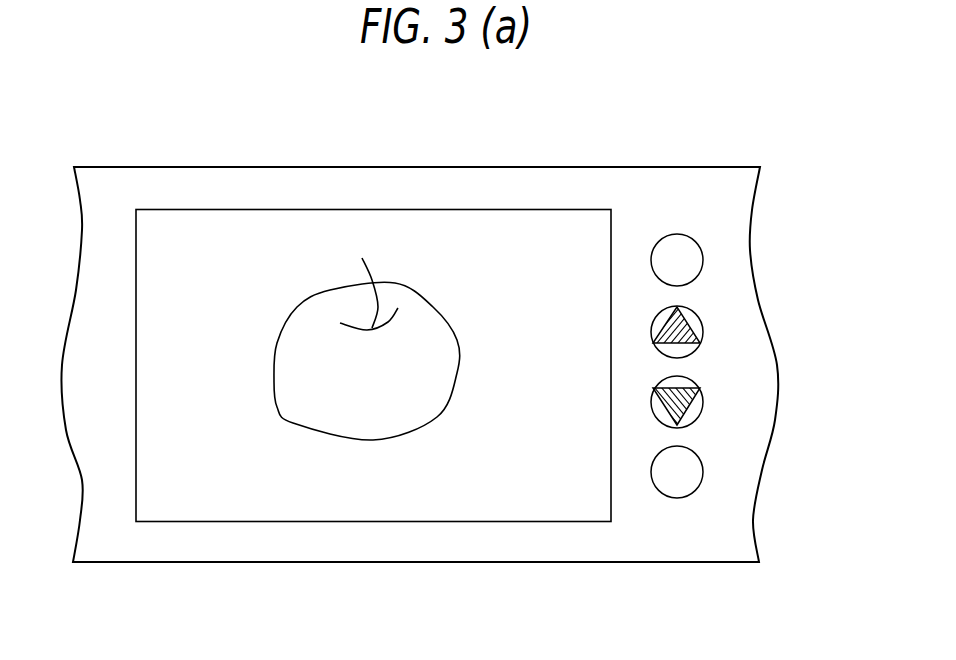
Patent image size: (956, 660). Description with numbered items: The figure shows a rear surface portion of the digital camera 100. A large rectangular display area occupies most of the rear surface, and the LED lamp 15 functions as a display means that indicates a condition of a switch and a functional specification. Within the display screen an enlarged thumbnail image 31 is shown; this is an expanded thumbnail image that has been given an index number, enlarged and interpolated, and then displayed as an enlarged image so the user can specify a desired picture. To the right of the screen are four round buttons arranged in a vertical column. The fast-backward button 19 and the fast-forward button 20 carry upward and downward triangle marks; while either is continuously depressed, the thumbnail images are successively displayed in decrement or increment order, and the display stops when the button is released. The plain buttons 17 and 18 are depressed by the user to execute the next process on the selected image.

The digital camera 100 is at (718, 148).
The LED lamp 15 is at (502, 200).
The enlarged thumbnail image 31 is at (288, 242).
The button 17 is at (703, 260).
The button 18 is at (703, 472).
The fast-backward button 19 is at (703, 332).
The fast-forward button 20 is at (703, 402).